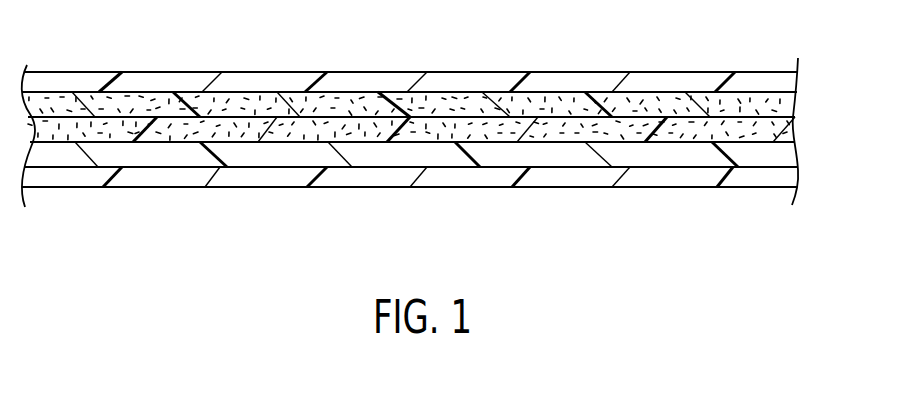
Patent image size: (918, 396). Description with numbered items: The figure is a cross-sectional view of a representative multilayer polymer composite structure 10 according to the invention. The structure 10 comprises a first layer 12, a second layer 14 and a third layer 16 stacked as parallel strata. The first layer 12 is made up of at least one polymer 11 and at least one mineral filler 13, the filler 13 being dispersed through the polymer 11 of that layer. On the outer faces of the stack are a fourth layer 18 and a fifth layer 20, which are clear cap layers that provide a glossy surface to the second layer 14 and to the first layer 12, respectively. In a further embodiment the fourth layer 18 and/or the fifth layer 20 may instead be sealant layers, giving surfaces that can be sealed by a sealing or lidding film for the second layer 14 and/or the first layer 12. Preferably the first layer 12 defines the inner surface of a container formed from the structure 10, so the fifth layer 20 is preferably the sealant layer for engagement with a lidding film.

The multilayer polymer composite structure 10 is at (773, 36).
The polymer 11 is at (437, 84).
The first layer 12 is at (780, 108).
The mineral filler 13 is at (443, 100).
The second layer 14 is at (783, 155).
The third layer 16 is at (774, 132).
The fourth layer 18 is at (62, 180).
The fifth layer 20 is at (63, 82).